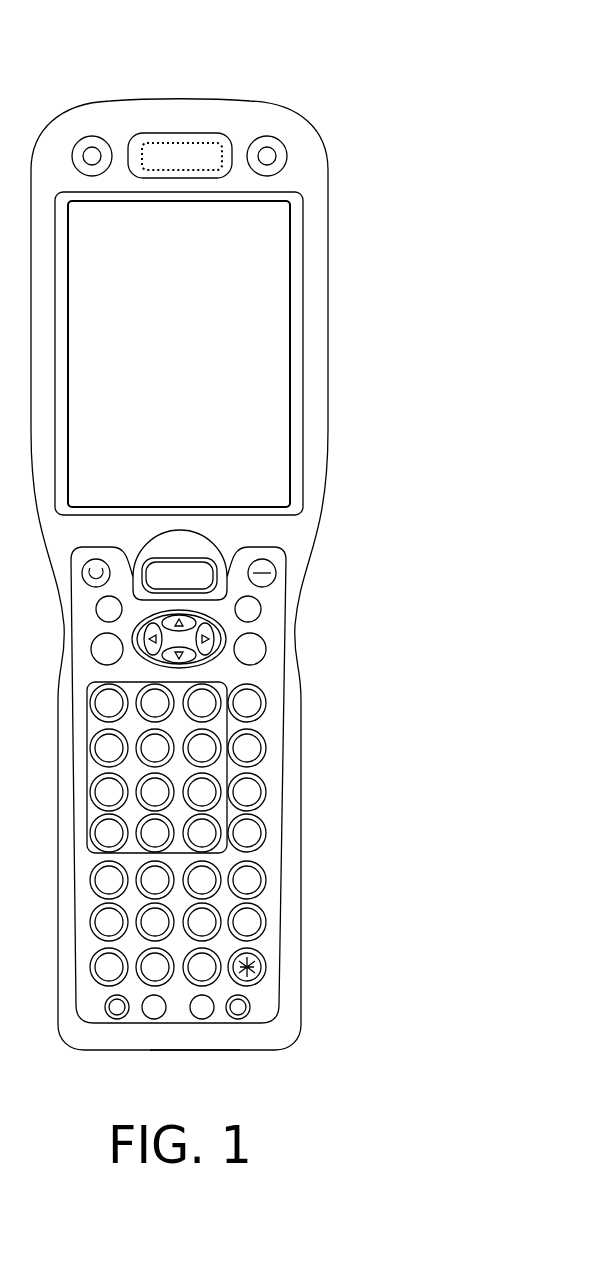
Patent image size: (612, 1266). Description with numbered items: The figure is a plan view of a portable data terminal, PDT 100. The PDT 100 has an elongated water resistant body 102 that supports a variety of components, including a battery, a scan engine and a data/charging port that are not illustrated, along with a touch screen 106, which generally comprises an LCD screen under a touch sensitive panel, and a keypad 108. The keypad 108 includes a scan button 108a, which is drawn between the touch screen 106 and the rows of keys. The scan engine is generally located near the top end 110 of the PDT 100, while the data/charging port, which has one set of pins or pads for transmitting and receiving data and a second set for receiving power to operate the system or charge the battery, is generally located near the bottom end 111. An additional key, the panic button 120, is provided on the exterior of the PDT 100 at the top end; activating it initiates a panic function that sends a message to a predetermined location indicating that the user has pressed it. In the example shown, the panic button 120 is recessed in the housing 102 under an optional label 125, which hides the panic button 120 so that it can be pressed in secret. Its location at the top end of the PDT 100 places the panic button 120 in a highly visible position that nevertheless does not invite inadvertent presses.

The PDT 100 is at (322, 66).
The body 102 is at (345, 297).
The touch screen 106 is at (205, 346).
The keypad 108 is at (268, 678).
The scan button 108a is at (215, 553).
The top end 110 is at (192, 98).
The bottom end 111 is at (194, 1050).
The panic button 120 is at (155, 148).
The label 125 is at (203, 133).